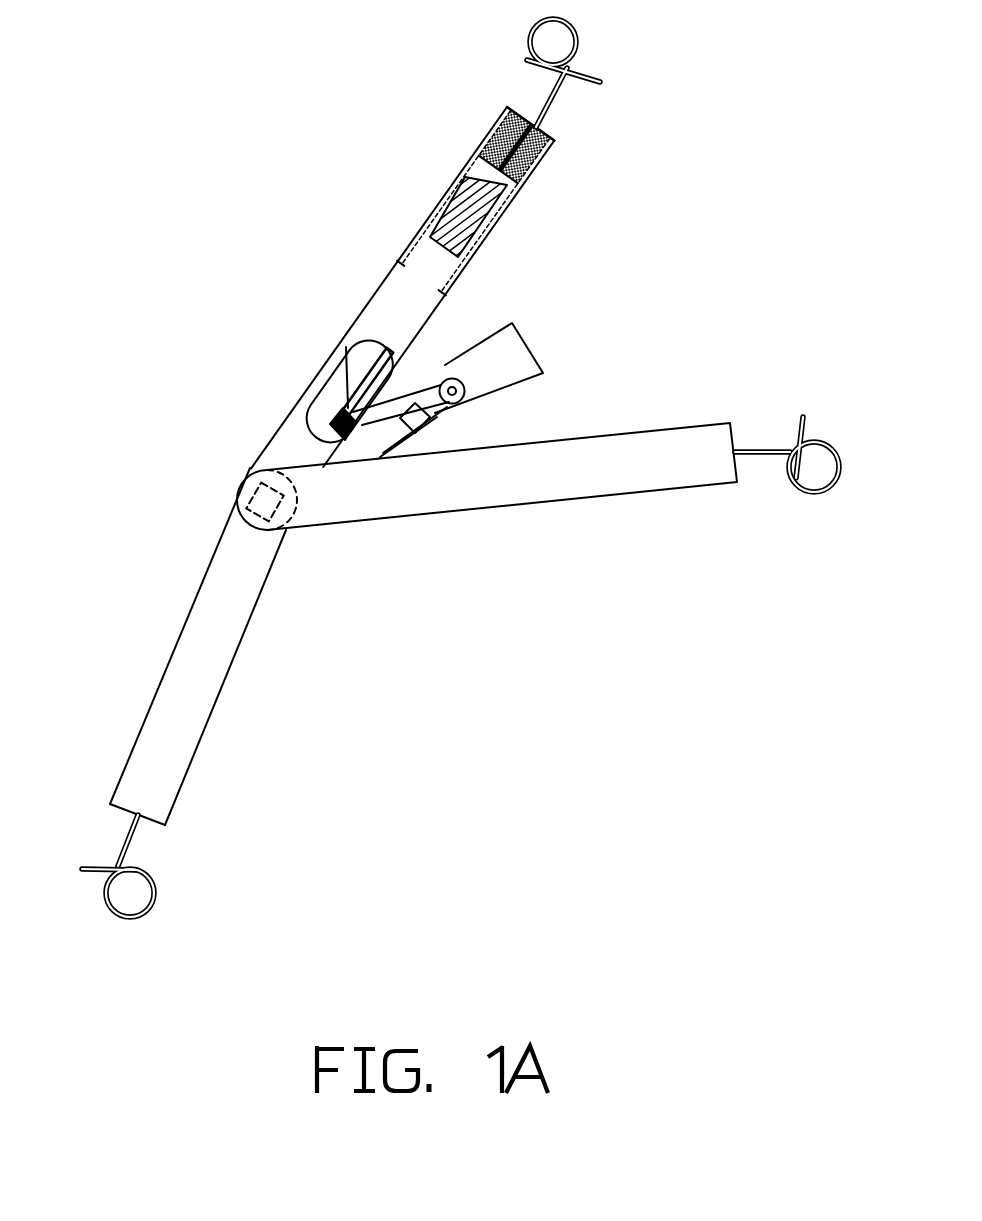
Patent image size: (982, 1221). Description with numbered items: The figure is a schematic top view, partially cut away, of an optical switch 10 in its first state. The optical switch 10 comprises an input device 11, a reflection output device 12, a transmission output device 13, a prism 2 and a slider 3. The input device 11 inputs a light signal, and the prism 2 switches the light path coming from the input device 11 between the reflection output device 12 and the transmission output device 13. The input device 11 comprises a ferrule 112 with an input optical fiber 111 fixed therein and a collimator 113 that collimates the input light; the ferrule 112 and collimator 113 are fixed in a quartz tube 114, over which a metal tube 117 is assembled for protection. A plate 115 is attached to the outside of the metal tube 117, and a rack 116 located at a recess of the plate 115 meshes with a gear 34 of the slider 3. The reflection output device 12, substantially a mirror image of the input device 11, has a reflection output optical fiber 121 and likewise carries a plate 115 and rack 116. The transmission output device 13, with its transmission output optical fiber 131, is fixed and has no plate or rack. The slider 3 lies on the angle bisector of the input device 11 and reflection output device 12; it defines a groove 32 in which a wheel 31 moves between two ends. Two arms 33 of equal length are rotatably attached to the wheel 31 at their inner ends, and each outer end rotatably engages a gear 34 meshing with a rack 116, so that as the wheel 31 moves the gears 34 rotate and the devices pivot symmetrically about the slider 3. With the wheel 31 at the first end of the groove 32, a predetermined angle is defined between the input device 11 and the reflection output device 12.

The optical switch 10 is at (640, 323).
The input device 11 is at (410, 290).
The input optical fiber 111 is at (551, 98).
The ferrule 112 is at (522, 177).
The collimator 113 is at (457, 182).
The quartz tube 114 is at (493, 133).
The plate 115 is at (330, 402).
The rack 116 is at (373, 345).
The metal tube 117 is at (507, 107).
The reflection output device 12 is at (553, 457).
The reflection output optical fiber 121 is at (805, 450).
The transmission output device 13 is at (168, 707).
The transmission output optical fiber 131 is at (140, 914).
The prism 2 is at (285, 528).
The slider 3 is at (439, 349).
The wheel 31 is at (417, 370).
The groove 32 is at (430, 420).
The arm 33 is at (430, 340).
The gear 34 is at (346, 347).